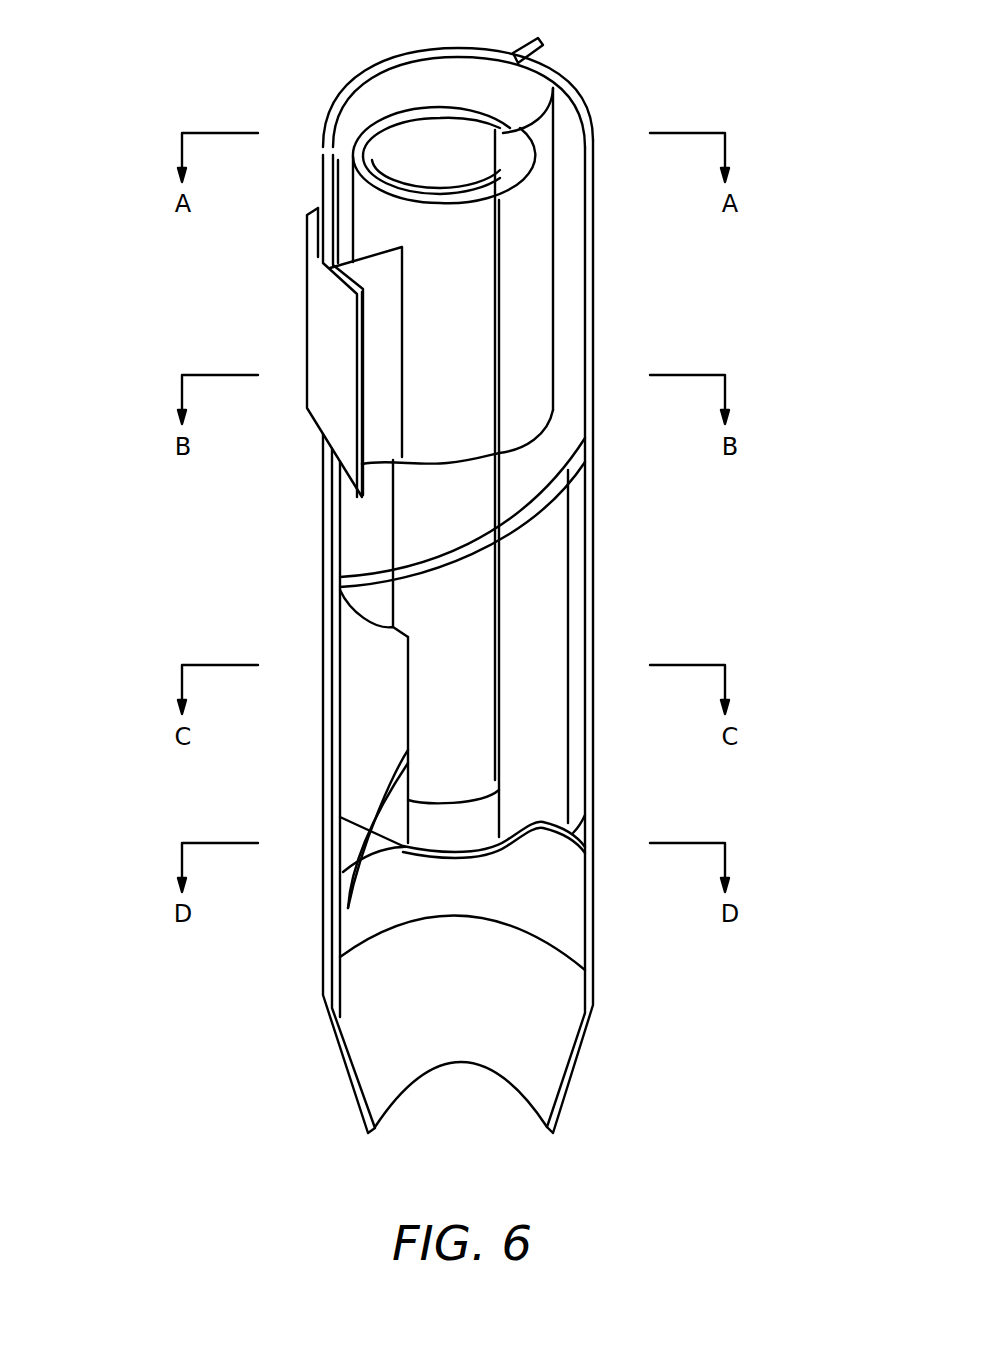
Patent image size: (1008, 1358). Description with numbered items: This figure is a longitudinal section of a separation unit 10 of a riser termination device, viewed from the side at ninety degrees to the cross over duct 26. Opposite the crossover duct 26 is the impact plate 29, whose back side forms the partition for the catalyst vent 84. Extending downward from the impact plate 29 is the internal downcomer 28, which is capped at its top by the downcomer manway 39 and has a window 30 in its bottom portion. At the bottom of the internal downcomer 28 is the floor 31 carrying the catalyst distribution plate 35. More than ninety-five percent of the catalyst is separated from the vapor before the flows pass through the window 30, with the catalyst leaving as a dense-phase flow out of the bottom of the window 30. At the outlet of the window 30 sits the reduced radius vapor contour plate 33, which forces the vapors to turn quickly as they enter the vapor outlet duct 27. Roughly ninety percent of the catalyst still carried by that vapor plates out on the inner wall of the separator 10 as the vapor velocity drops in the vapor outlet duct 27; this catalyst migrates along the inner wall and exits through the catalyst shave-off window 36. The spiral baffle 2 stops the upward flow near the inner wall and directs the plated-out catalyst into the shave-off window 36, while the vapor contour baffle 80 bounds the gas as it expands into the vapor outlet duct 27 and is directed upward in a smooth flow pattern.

The separation unit 10 is at (617, 429).
The spiral baffle 2 is at (340, 577).
The cross over duct 26 is at (325, 352).
The vapor outlet duct 27 is at (573, 205).
The internal downcomer 28 is at (433, 280).
The impact plate 29 is at (507, 123).
The window 30 is at (400, 693).
The floor 31 is at (385, 810).
The reduced radius vapor contour plate 33 is at (357, 615).
The catalyst distribution plate 35 is at (367, 873).
The catalyst shave-off window 36 is at (577, 626).
The downcomer manway 39 is at (425, 153).
The vapor contour baffle 80 is at (573, 833).
The catalyst vent 84 is at (545, 42).